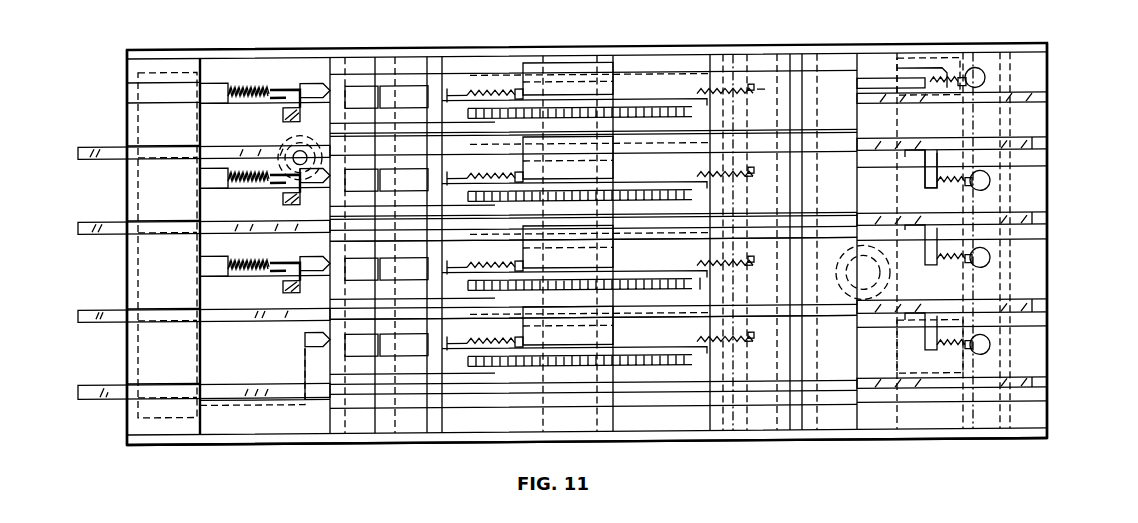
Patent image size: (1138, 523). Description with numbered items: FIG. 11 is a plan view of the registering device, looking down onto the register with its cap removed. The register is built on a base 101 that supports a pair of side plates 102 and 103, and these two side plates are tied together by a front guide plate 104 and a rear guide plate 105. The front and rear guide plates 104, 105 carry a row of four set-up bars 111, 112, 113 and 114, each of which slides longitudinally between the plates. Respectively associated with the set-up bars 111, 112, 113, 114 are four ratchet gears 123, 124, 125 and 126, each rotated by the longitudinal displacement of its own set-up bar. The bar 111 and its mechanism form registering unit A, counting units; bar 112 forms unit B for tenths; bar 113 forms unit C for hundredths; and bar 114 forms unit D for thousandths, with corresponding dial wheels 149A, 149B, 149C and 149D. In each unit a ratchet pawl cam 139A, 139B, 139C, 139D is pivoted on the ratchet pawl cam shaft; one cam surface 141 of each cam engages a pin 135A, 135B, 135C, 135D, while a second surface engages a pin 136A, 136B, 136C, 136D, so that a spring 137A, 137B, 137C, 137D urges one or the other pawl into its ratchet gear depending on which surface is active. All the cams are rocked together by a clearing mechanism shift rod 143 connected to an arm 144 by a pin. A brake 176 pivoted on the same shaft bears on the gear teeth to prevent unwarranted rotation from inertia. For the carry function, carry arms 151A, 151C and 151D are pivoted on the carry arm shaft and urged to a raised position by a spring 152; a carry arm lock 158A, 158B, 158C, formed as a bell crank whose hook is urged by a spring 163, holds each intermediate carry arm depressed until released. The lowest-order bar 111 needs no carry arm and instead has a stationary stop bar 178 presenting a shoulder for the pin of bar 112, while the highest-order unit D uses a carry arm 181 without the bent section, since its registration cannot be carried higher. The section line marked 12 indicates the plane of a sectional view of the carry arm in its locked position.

The base 101 is at (245, 374).
The side plate 102 is at (165, 52).
The side plate 103 is at (152, 447).
The front guide plate 104 is at (127, 357).
The rear guide plate 105 is at (1050, 335).
The set-up bar 111 is at (100, 386).
The set-up bar 112 is at (78, 318).
The set-up bar 113 is at (100, 234).
The set-up bar 114 is at (90, 151).
The section line 12 is at (127, 408).
The ratchet gear 123 is at (638, 364).
The ratchet gear 124 is at (628, 277).
The ratchet gear 125 is at (620, 194).
The ratchet gear 126 is at (627, 94).
The pin 135A is at (456, 345).
The pin 135B is at (460, 261).
The pin 135C is at (463, 172).
The pin 135D is at (455, 78).
The pin 136A is at (763, 328).
The pin 136B is at (763, 255).
The pin 136C is at (763, 164).
The pin 136D is at (753, 89).
The spring 137A is at (690, 344).
The spring 137B is at (700, 266).
The spring 137C is at (700, 171).
The spring 137D is at (698, 90).
The ratchet pawl cam 139A is at (588, 320).
The ratchet pawl cam 139B is at (577, 282).
The ratchet pawl cam 139C is at (582, 185).
The ratchet pawl cam 139D is at (575, 100).
The cam surface 141 is at (535, 279).
The clearing mechanism shift rod 143 is at (896, 290).
The arm 144 is at (1030, 268).
The dial wheel 149A is at (305, 340).
The dial wheel 149B is at (323, 268).
The dial wheel 149C is at (330, 146).
The dial wheel 149D is at (323, 96).
The carry arm 151A is at (280, 297).
The carry arm 151C is at (280, 208).
The carry arm 151D is at (284, 125).
The spring 152 is at (980, 358).
The carry arm lock 158A is at (306, 287).
The carry arm lock 158B is at (307, 197).
The carry arm lock 158C is at (307, 114).
The spring 163 is at (222, 70).
The brake 176 is at (702, 292).
The stationary stop bar 178 is at (330, 402).
The carry arm 181 is at (335, 83).